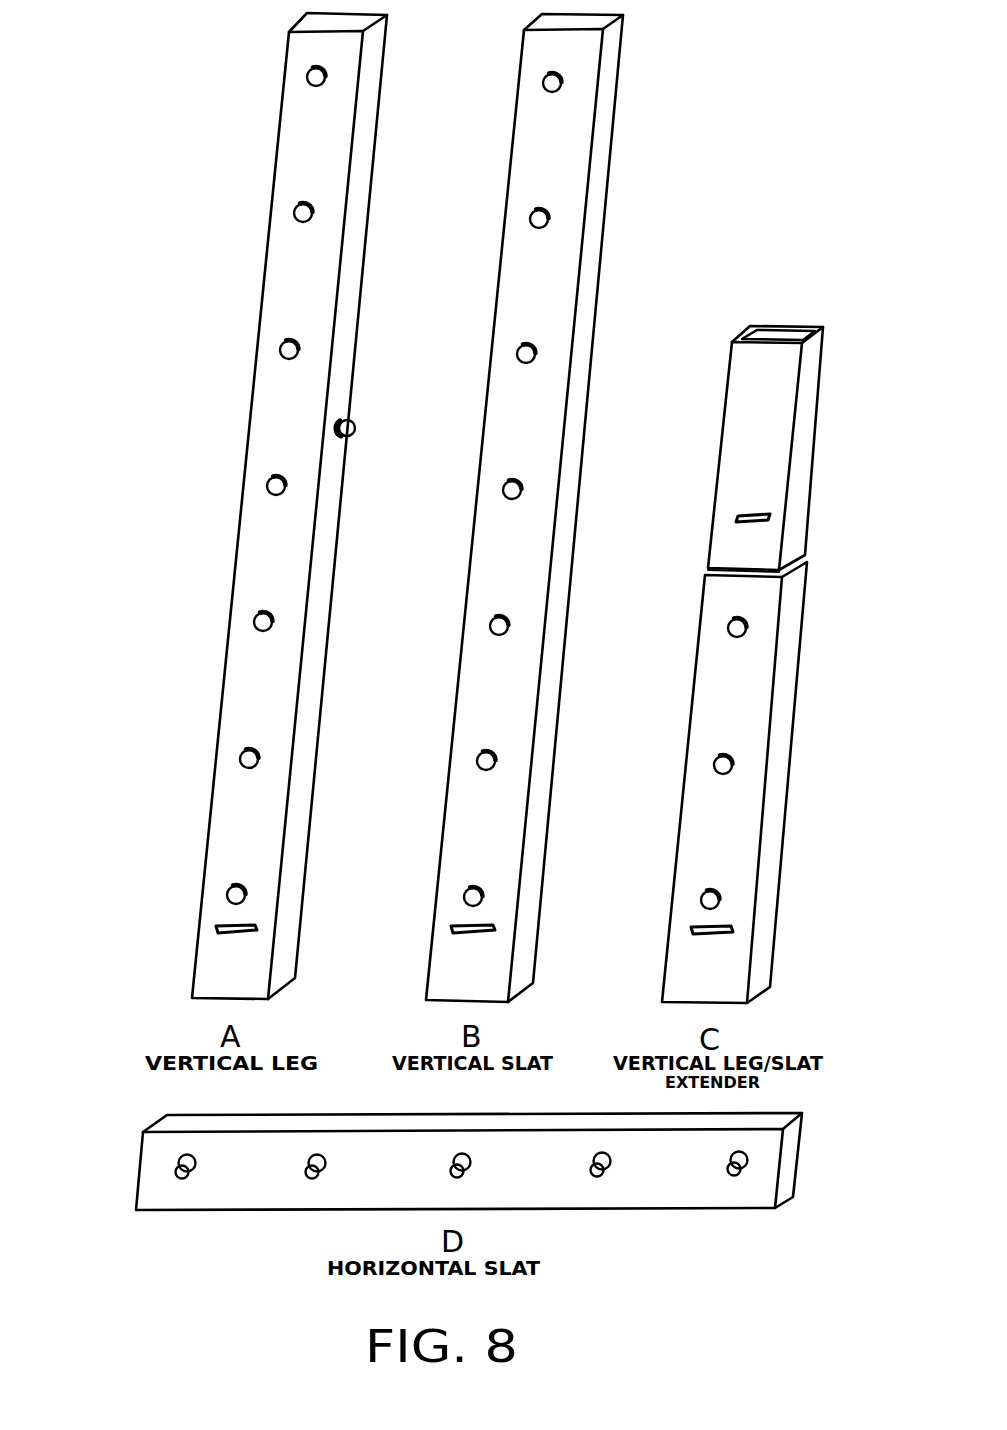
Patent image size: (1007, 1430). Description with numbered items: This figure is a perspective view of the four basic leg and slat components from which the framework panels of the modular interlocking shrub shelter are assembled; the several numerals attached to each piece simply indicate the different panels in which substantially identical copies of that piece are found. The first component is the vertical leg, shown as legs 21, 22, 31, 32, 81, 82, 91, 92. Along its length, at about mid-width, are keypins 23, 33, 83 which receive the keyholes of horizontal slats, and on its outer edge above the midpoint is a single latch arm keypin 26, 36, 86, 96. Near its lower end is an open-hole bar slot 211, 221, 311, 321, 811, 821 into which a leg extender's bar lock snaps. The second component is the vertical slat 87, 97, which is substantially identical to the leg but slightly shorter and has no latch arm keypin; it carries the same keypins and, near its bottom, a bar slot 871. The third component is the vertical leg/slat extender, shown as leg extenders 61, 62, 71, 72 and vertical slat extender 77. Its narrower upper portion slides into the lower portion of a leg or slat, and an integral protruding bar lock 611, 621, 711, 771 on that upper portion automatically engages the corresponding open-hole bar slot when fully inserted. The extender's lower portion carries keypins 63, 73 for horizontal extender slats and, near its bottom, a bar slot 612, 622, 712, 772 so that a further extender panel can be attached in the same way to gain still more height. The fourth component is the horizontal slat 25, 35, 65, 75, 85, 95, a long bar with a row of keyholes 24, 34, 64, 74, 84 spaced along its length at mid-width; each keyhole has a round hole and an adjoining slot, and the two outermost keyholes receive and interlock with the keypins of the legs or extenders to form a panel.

The left leg 21 is at (248, 506).
The right leg 22 is at (248, 506).
The left leg 31 is at (248, 506).
The right leg 32 is at (248, 506).
The vertical leg 81 is at (248, 506).
The vertical leg 82 is at (248, 506).
The leg 91 is at (248, 506).
The leg 92 is at (248, 506).
The keypin 23 is at (242, 355).
The keypin 33 is at (242, 355).
The keypin 83 is at (361, 355).
The latch arm keypin 26 is at (375, 443).
The latch arm keypin 36 is at (375, 443).
The latch arm keypin 86 is at (375, 443).
The latch arm keypin 96 is at (359, 431).
The open-hole bar slot receptacle 211 is at (169, 921).
The open-hole bar slot receptacle 221 is at (169, 921).
The open-hole bar slot 311 is at (169, 921).
The open-hole bar slot 321 is at (169, 921).
The bar slot 811 is at (169, 921).
The bar slot 821 is at (169, 921).
The vertical slat 87 is at (490, 508).
The vertical slat 97 is at (490, 508).
The bar slot 871 is at (451, 928).
The rear leg extender 61 is at (692, 664).
The front leg extender 62 is at (692, 664).
The rear leg extender 71 is at (692, 664).
The vertical leg/slat extender 72 is at (692, 664).
The vertical slat extender 77 is at (692, 664).
The leg extender bar lock 611 is at (686, 519).
The bar lock 621 is at (686, 519).
The bar lock 711 is at (686, 519).
The bar lock 771 is at (737, 519).
The keypin 63 is at (674, 764).
The hole in extender 73 is at (712, 767).
The bar slot 612 is at (647, 933).
The bar slot 622 is at (647, 933).
The bar slot 712 is at (647, 933).
The bar slot 772 is at (691, 930).
The horizontal slat 25 is at (472, 1161).
The slat 35 is at (472, 1161).
The horizontal extender slat 65 is at (472, 1161).
The horizontal slat 75 is at (472, 1161).
The horizontal slat 85 is at (472, 1161).
The horizontal slat 95 is at (472, 1161).
The keyhole 24 is at (815, 1158).
The keyhole in horizontal slat 34 is at (815, 1158).
The keyhole 64 is at (815, 1158).
The keyhole in horizontal slat 74 is at (815, 1158).
The keyhole 84 is at (815, 1158).